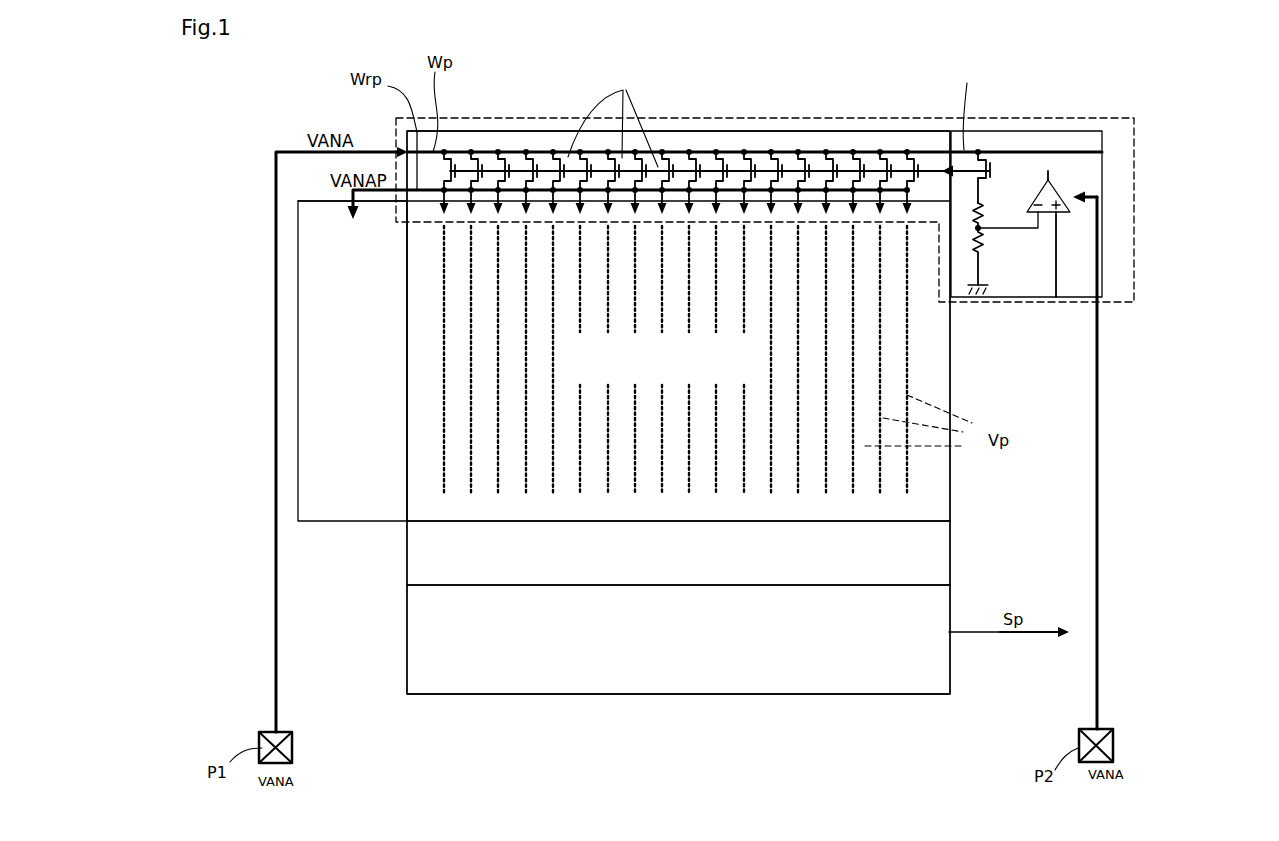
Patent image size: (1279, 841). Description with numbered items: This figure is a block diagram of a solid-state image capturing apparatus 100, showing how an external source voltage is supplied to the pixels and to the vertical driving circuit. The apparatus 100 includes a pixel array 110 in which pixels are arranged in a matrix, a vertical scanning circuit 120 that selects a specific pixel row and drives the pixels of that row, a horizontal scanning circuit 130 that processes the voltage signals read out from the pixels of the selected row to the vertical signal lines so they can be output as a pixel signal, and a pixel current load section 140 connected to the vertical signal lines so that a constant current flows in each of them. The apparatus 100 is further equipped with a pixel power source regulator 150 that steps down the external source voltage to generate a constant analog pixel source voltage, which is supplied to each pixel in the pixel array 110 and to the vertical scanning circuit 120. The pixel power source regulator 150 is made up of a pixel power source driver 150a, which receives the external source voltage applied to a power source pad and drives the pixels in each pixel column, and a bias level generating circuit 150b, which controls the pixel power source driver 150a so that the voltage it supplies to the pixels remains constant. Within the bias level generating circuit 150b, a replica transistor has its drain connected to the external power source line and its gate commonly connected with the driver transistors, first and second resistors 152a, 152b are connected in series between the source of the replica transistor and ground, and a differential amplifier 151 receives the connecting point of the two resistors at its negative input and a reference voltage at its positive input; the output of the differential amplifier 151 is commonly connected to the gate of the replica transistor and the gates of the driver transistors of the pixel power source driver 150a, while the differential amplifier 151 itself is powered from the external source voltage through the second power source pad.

The solid-state image capturing apparatus 100 is at (560, 764).
The pixel array 110 is at (943, 492).
The vertical scanning circuit 120 is at (322, 268).
The horizontal scanning circuit 130 is at (868, 676).
The pixel current load section 140 is at (937, 558).
The pixel power source regulator 150 is at (1055, 116).
The pixel power source driver 150a is at (488, 142).
The bias level generating circuit 150b is at (1079, 218).
The differential amplifier 151 is at (1048, 195).
The first resistor 152a is at (987, 218).
The second resistor 152b is at (965, 250).